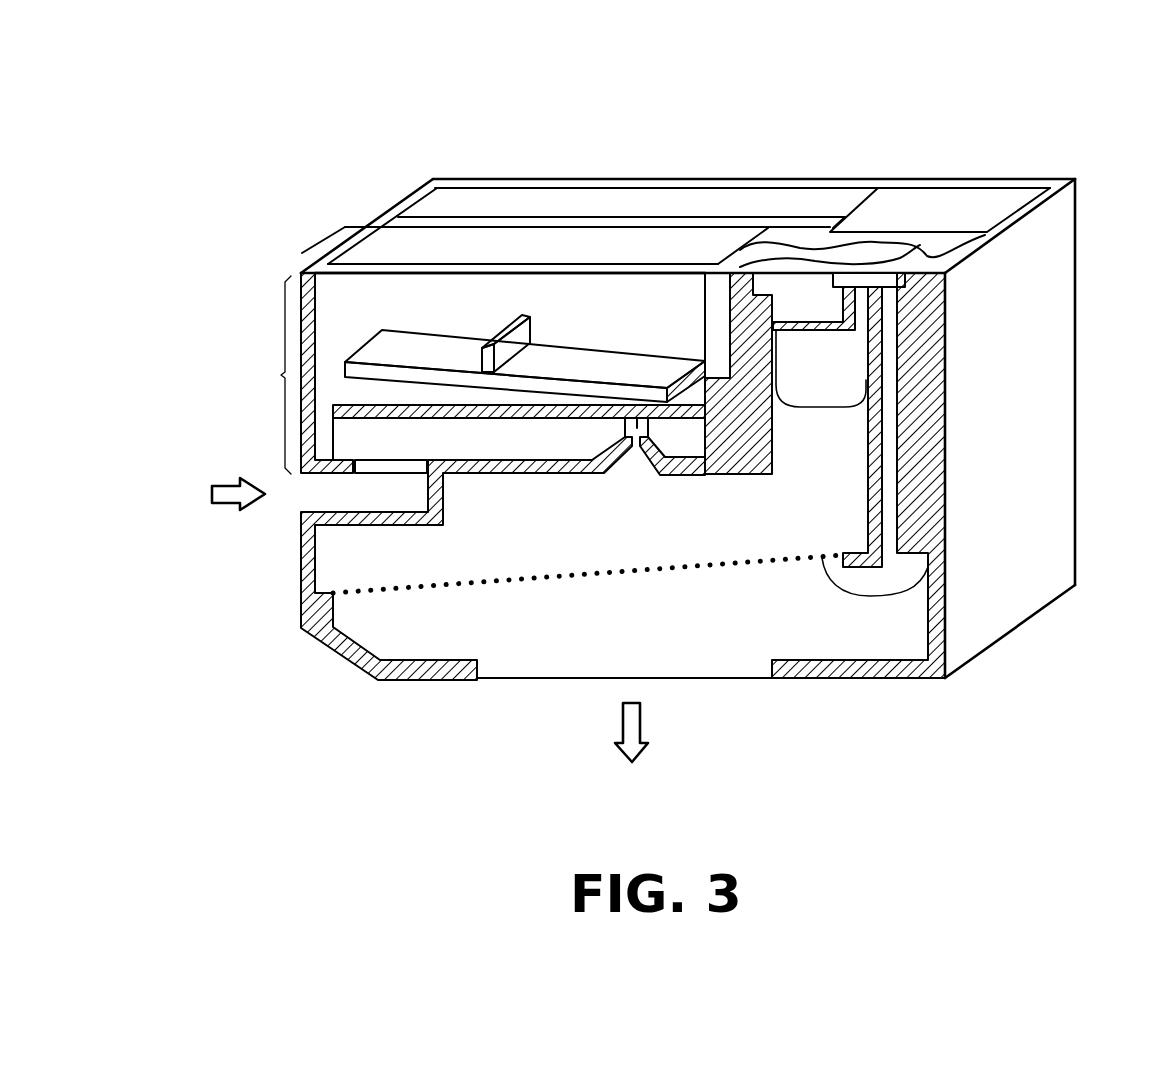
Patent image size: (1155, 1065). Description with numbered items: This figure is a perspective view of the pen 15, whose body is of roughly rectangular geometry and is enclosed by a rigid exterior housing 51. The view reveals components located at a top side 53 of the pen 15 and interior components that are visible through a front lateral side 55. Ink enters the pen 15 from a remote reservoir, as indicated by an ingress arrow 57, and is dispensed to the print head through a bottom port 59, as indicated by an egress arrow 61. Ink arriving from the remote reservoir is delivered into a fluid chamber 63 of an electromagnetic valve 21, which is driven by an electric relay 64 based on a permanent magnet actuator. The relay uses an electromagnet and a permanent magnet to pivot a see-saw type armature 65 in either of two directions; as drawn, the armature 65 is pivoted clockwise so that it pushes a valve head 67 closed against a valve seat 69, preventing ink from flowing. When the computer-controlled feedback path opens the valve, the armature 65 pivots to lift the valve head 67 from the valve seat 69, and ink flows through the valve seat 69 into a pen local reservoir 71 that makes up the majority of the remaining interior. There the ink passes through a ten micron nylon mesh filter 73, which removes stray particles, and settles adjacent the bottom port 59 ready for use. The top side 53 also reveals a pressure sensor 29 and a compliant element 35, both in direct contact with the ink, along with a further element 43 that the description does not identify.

The pen 15 is at (541, 136).
The electromagnetic valve 21 is at (271, 375).
The pressure sensor 29 is at (922, 207).
The compliant element 35 is at (631, 202).
The flexible strip 43 is at (962, 252).
The rigid exterior housing 51 is at (988, 597).
The top side 53 is at (878, 190).
The front lateral side 55 is at (464, 299).
The ingress arrow 57 is at (237, 470).
The bottom port 59 is at (478, 668).
The egress arrow 61 is at (642, 727).
The fluid chamber 63 is at (370, 441).
The electric relay 64 is at (397, 237).
The armature 65 is at (383, 345).
The valve head 67 is at (637, 407).
The valve seat 69 is at (646, 470).
The pen local reservoir 71 is at (390, 558).
The nylon mesh filter 73 is at (478, 583).